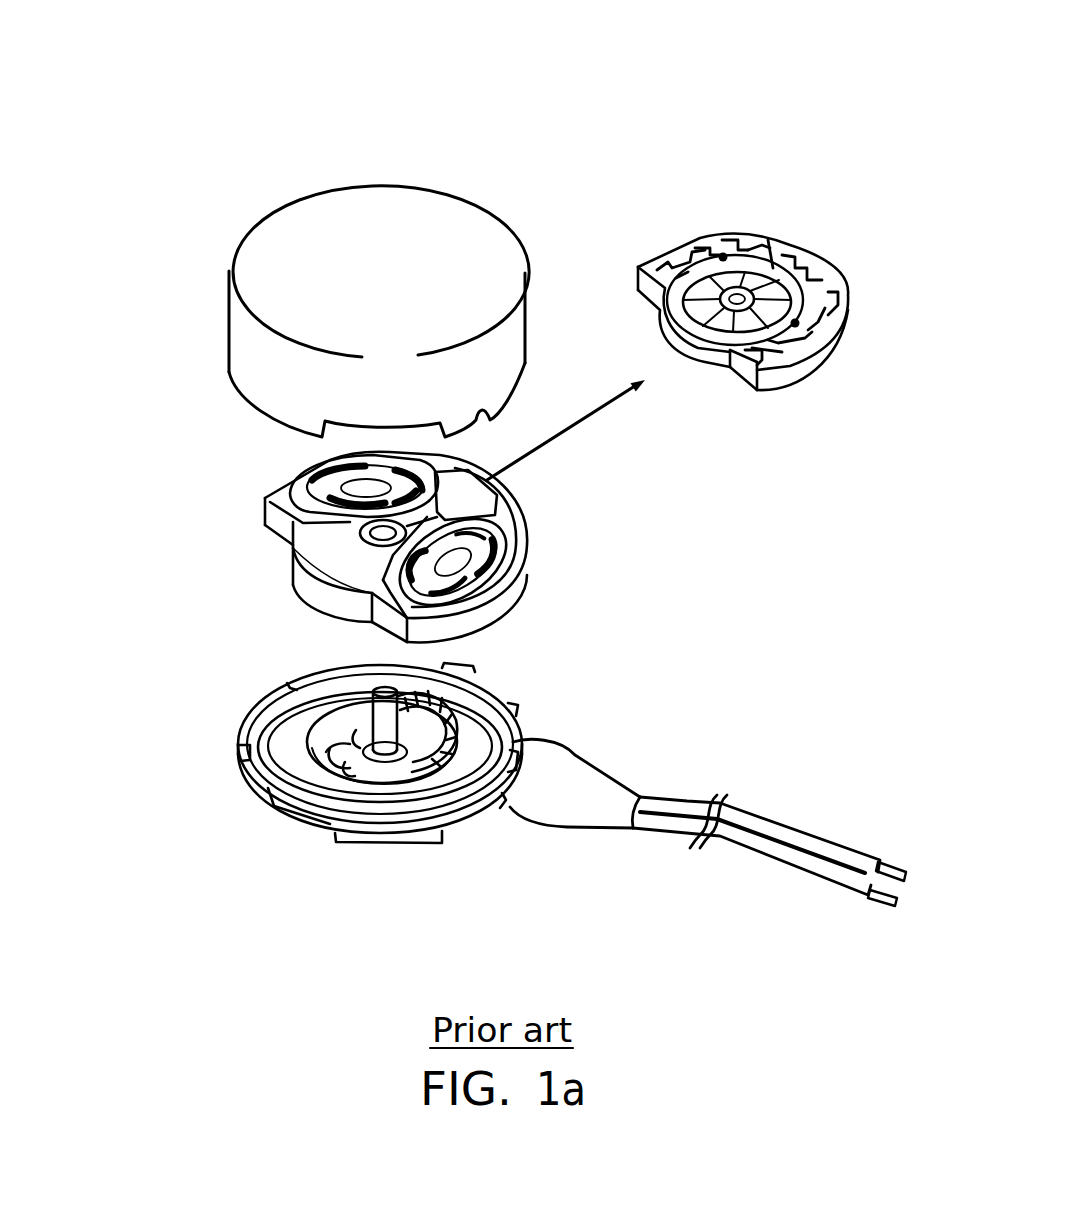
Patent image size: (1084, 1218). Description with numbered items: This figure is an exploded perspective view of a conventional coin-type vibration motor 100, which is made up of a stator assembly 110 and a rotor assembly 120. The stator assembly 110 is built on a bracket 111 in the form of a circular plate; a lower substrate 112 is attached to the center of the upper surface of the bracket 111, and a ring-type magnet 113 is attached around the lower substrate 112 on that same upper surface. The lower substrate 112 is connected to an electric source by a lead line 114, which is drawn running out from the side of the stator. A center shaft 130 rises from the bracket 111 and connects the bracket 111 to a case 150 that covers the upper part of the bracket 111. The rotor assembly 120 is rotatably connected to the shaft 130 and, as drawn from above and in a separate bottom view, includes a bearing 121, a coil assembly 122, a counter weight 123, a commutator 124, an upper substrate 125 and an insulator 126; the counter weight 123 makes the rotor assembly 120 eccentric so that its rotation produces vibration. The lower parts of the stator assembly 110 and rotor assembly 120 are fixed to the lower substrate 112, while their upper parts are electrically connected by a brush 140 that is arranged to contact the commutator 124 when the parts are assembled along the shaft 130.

The coin-type vibration motor 100 is at (497, 80).
The stator assembly 110 is at (218, 703).
The bracket 111 is at (277, 795).
The lower substrate 112 is at (337, 743).
The ring-type magnet 113 is at (262, 743).
The lead line 114 is at (808, 822).
The rotor assembly 120 is at (253, 478).
The bearing 121 is at (292, 545).
The coil assembly 122 is at (493, 545).
The counter weight 123 is at (497, 487).
The commutator 124 is at (771, 270).
The upper substrate 125 is at (837, 310).
The insulator 126 is at (340, 565).
The center shaft 130 is at (377, 692).
The brush 140 is at (430, 707).
The case 150 is at (205, 255).